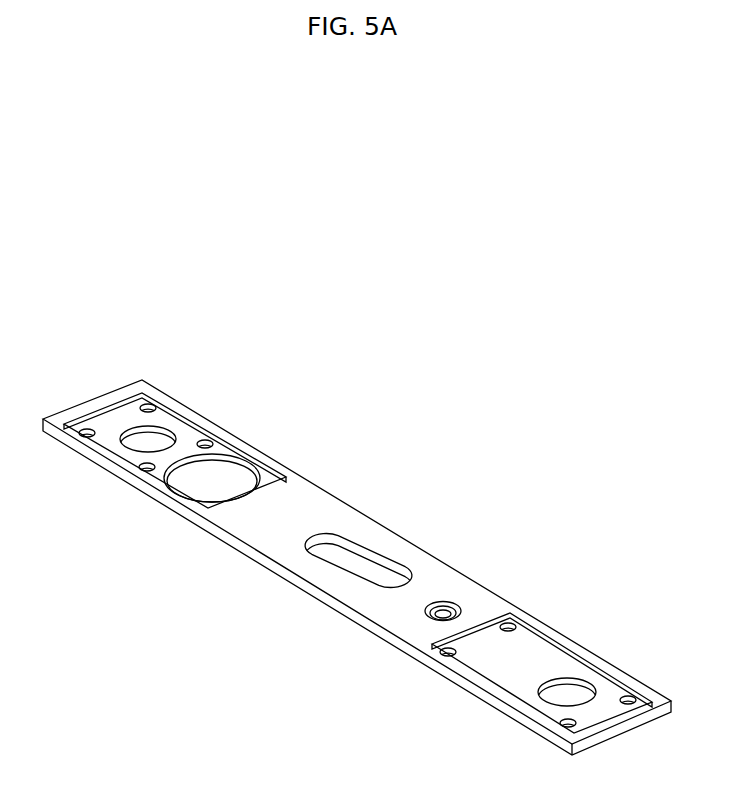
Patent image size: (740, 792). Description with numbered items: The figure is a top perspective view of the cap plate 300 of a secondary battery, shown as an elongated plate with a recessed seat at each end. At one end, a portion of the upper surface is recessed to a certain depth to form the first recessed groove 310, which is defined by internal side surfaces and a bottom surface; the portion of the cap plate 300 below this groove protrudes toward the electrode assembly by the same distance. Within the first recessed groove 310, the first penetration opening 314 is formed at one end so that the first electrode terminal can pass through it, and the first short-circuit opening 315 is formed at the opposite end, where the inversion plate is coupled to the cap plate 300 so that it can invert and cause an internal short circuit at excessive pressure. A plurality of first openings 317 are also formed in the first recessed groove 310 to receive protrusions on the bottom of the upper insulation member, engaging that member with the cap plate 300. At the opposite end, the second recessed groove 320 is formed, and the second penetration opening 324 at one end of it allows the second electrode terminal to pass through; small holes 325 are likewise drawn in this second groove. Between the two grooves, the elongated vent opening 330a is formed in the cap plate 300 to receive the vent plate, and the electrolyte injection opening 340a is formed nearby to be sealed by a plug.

The cap plate 300 is at (315, 498).
The first recessed groove 310 is at (117, 418).
The first penetration opening 314 is at (152, 440).
The first short-circuit opening 315 is at (223, 479).
The first openings 317 is at (137, 446).
The second recessed groove 320 is at (544, 651).
The second penetration opening 324 is at (567, 697).
The fastening holes 325 is at (509, 629).
The vent opening 330a is at (340, 552).
The electrolyte injection opening 340a is at (447, 603).